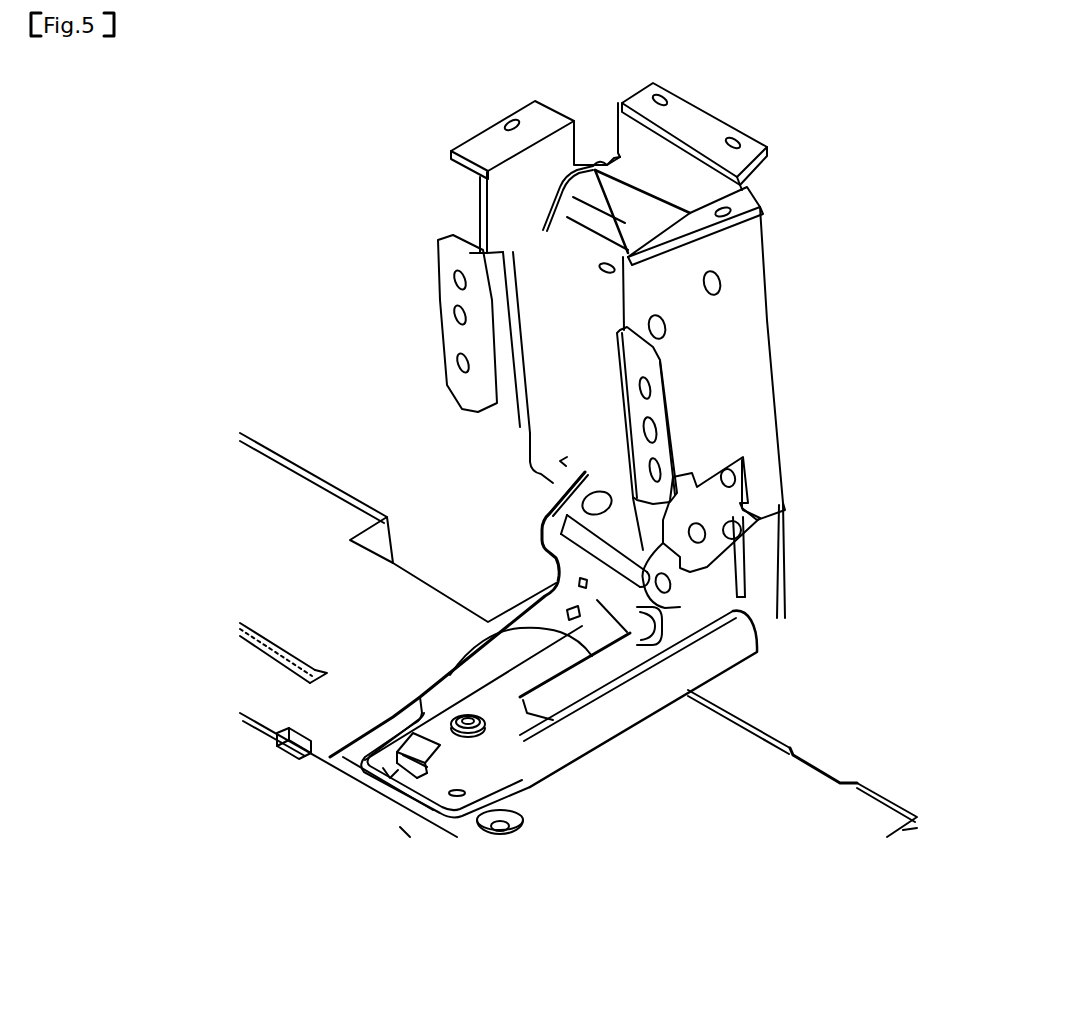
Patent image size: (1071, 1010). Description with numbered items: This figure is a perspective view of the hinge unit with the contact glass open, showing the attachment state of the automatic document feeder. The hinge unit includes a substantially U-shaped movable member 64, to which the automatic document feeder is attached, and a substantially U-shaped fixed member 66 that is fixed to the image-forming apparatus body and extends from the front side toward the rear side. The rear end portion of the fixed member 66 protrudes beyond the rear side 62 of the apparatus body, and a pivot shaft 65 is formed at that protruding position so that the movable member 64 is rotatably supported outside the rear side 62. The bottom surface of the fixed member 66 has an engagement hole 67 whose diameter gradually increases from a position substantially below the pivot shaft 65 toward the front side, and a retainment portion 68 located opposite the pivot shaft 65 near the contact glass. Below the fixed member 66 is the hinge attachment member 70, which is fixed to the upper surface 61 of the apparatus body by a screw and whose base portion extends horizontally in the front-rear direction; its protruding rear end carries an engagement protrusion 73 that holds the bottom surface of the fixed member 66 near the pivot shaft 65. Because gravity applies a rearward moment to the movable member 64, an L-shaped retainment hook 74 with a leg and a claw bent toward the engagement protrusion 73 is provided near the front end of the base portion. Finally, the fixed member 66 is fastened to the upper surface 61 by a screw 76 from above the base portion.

The upper surface 61 is at (398, 565).
The rear side 62 is at (643, 763).
The movable member 64 is at (715, 332).
The pivot shaft 65 is at (741, 532).
The fixed member 66 is at (499, 362).
The engagement hole 67 is at (280, 765).
The retainment portion 68 is at (416, 849).
The hinge attachment member 70 is at (543, 707).
The engagement protrusion 73 is at (623, 667).
The retainment hook 74 is at (325, 852).
The screw 76 is at (493, 843).